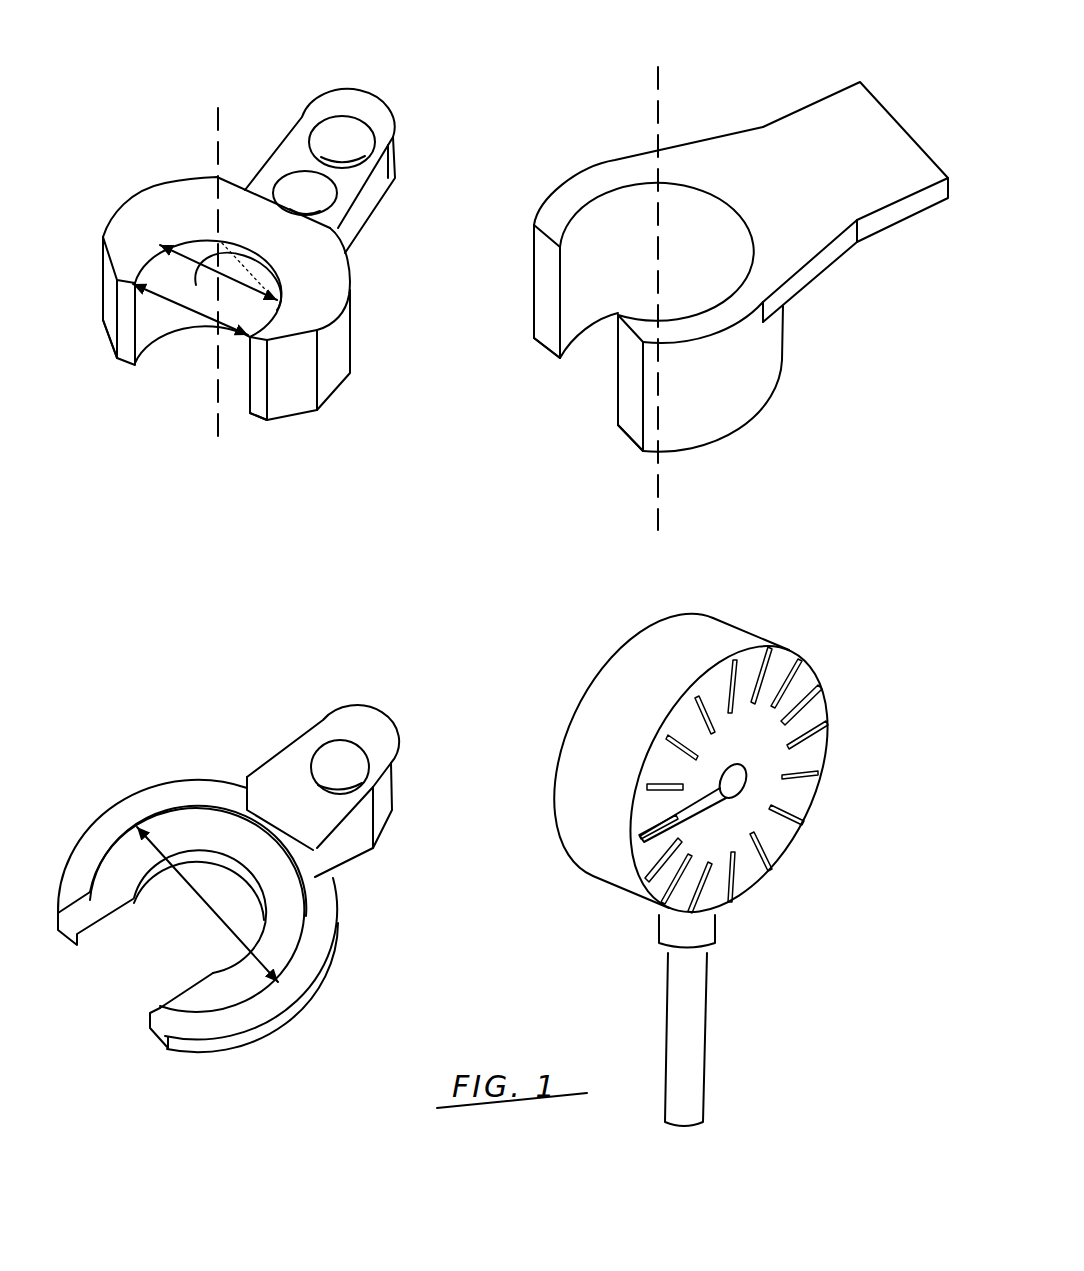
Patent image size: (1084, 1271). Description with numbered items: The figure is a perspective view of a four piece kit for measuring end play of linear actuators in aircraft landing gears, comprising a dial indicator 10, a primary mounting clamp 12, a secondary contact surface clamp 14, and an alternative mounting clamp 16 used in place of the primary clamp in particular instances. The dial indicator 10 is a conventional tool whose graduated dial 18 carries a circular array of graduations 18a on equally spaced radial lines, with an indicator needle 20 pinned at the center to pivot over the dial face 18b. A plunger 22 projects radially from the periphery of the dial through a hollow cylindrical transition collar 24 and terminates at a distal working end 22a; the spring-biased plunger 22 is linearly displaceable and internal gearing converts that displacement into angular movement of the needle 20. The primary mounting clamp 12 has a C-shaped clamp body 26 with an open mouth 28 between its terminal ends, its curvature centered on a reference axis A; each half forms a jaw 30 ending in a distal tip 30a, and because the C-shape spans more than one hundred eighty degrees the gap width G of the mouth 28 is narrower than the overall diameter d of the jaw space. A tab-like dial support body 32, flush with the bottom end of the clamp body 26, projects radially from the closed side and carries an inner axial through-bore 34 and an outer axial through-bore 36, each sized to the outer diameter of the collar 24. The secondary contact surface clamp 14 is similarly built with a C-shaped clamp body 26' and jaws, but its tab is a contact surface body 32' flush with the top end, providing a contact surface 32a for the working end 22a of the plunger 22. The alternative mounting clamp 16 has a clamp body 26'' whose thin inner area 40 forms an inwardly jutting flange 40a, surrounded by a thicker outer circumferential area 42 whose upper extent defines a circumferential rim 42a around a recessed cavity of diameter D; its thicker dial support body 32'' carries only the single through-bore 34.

The dial indicator 10 is at (852, 622).
The primary mounting clamp 12 is at (308, 75).
The secondary contact surface clamp 14 is at (736, 84).
The alternative mounting clamp 16 is at (247, 717).
The graduated dial 18 is at (713, 628).
The graduations 18a is at (807, 720).
The dial face 18b is at (758, 765).
The indicator needle 20 is at (707, 803).
The plunger 22 is at (690, 1080).
The distal working end 22a is at (685, 1128).
The transition collar 24 is at (703, 930).
The C-shaped clamp body 26 is at (147, 235).
The C-shaped clamp body 26' is at (613, 123).
The clamp body 26'' is at (67, 800).
The open mouth 28 is at (183, 357).
The jaw 30 is at (147, 202).
The distal tip 30a is at (135, 350).
The dial support body 32 is at (346, 158).
The contact surface body 32' is at (862, 181).
The dial support body 32'' is at (323, 762).
The contact surface 32a is at (835, 123).
The inner axial through-bore 34 is at (292, 193).
The outer axial through-bore 36 is at (338, 137).
The inner area 40 is at (223, 830).
The flange 40a is at (287, 952).
The outer circumferential area 42 is at (307, 1000).
The circumferential rim 42a is at (182, 795).
The reference axis A is at (213, 437).
The overall diameter of the jaw space d is at (228, 260).
The gap width G is at (200, 313).
The diameter of the axially recessed cavity D is at (207, 904).